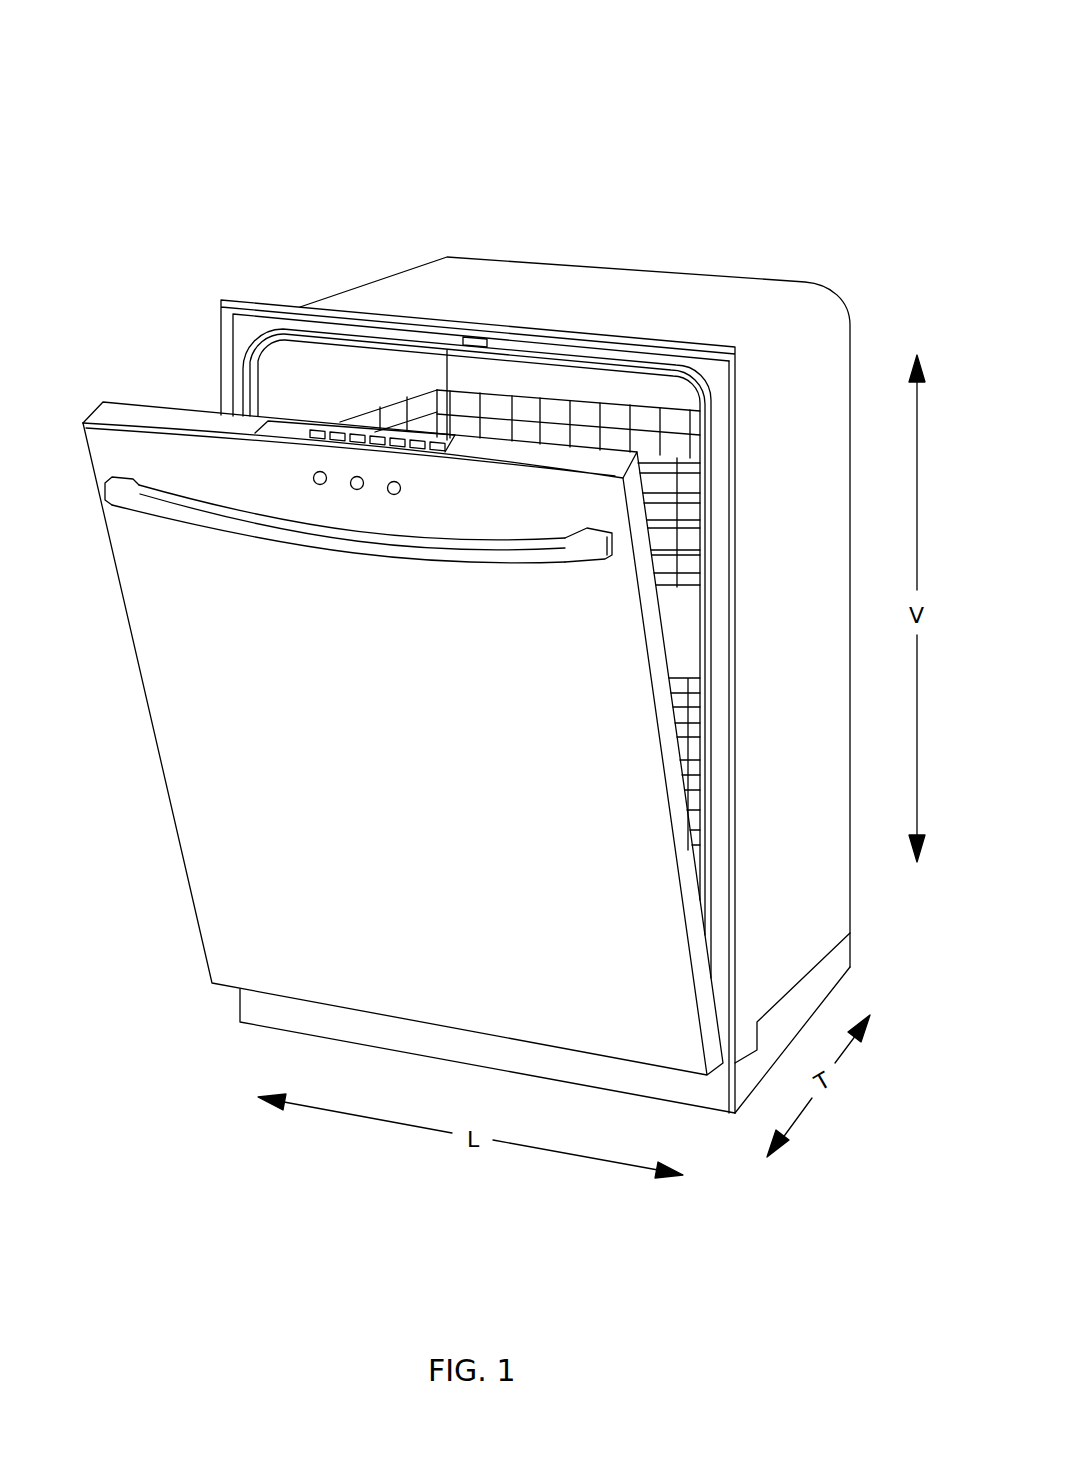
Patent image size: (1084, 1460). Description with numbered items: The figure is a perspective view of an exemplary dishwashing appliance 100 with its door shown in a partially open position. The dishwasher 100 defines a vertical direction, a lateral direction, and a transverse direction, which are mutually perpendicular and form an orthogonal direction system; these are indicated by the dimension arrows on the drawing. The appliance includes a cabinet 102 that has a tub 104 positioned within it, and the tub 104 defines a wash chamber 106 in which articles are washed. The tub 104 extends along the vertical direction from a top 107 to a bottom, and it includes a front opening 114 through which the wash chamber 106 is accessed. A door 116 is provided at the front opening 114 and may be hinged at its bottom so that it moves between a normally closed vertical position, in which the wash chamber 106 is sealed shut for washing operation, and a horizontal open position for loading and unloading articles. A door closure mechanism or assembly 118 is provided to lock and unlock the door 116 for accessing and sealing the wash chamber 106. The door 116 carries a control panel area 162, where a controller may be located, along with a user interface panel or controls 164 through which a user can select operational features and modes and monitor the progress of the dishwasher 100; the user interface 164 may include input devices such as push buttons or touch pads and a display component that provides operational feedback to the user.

The dishwashing appliance 100 is at (228, 150).
The cabinet 102 is at (718, 293).
The tub 104 is at (343, 333).
The wash chamber 106 is at (417, 387).
The top 107 is at (293, 327).
The front opening 114 is at (590, 397).
The door 116 is at (193, 773).
The door closure mechanism 118 is at (477, 337).
The control panel area 162 is at (140, 418).
The user interface panel 164 is at (392, 496).